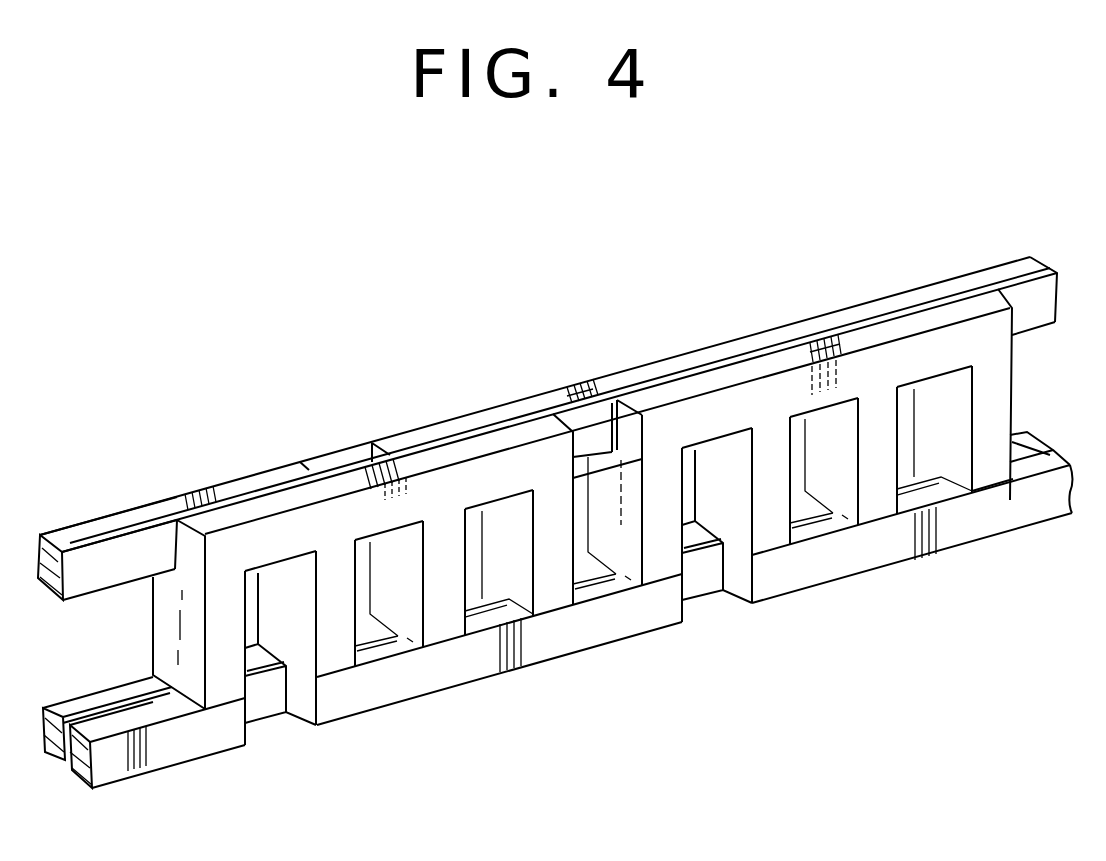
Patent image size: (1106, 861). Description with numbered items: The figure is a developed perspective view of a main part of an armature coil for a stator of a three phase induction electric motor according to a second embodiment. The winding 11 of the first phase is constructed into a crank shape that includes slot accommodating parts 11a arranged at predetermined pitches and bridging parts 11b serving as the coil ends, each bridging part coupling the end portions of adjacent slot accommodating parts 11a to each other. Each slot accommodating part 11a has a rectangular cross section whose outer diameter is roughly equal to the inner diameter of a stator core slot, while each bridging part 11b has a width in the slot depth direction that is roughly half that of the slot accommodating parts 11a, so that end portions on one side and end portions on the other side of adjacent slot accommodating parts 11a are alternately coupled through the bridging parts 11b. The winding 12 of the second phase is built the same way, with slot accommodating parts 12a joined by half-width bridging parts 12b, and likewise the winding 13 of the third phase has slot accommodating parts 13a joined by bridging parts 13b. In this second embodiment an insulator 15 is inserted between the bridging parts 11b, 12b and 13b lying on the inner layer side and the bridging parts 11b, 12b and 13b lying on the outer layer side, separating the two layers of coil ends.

The winding of the first phase 11 is at (352, 482).
The slot accommodating parts 11a is at (547, 577).
The bridging parts 11b is at (440, 455).
The winding of the second phase 12 is at (779, 344).
The slot accommodating parts 12a is at (336, 655).
The bridging parts 12b is at (232, 493).
The winding of the third phase 13 is at (570, 388).
The slot accommodating parts 13a is at (440, 615).
The bridging parts 13b is at (505, 395).
The insulator 15 is at (118, 555).